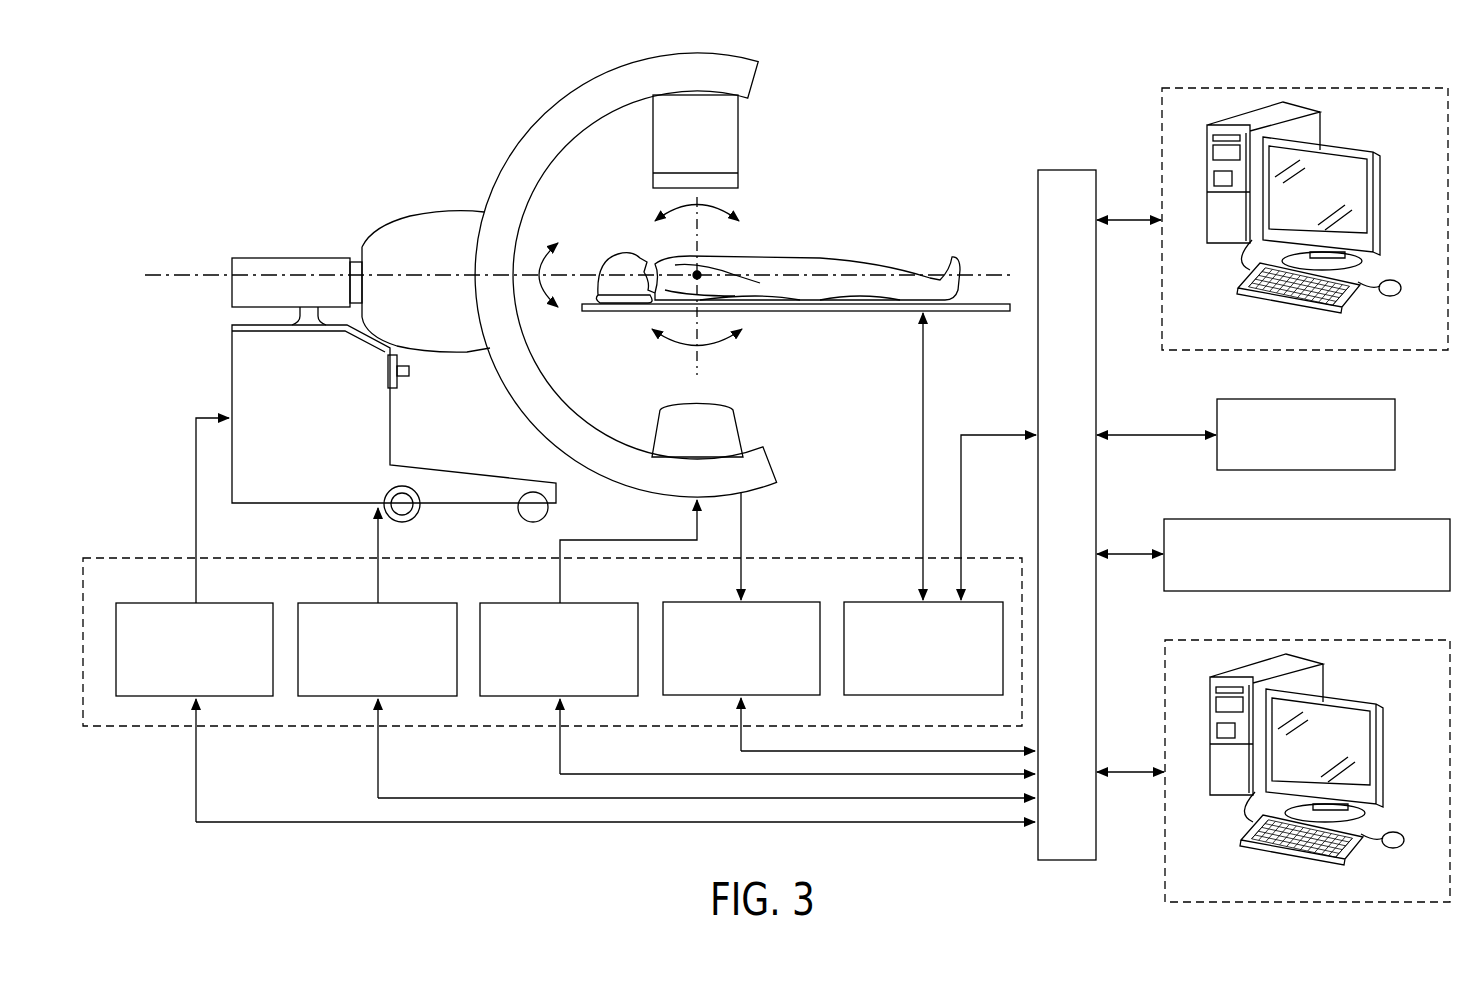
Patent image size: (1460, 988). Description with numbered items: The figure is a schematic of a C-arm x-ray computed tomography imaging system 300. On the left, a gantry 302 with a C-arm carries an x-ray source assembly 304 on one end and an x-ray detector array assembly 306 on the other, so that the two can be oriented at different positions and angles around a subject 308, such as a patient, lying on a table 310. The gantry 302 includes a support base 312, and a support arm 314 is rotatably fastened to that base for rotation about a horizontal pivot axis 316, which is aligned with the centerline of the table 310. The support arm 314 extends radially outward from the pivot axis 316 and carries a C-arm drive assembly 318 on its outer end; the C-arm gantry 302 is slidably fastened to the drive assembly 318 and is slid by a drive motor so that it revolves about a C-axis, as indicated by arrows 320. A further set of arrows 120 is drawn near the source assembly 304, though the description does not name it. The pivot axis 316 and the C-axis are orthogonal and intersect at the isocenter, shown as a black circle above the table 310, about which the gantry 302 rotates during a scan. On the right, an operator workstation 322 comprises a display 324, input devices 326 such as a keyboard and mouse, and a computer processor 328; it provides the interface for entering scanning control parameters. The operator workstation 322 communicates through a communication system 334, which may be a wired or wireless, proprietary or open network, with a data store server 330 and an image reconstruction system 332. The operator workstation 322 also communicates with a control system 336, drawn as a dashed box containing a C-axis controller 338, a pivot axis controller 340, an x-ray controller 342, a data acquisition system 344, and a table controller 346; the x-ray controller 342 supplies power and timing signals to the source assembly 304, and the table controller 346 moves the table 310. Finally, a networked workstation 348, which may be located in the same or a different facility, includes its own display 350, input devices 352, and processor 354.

The C-arm x-ray imaging system 300 is at (254, 132).
The gantry 302 is at (520, 140).
The x-ray source assembly 304 is at (738, 141).
The x-ray detector array assembly 306 is at (736, 425).
The subject 308 is at (789, 249).
The table 310 is at (950, 313).
The support base 312 is at (230, 372).
The support arm 314 is at (323, 257).
The horizontal pivot axis 316 is at (210, 280).
The C-arm drive assembly 318 is at (408, 215).
The rotation direction of source 120 is at (733, 206).
The arrows 320 is at (716, 345).
The operator workstation 322 is at (1305, 198).
The display 324 is at (1342, 141).
The input devices 326 is at (1240, 278).
The computer processor 328 is at (1242, 116).
The data store server 330 is at (1329, 399).
The image reconstruction system 332 is at (1385, 519).
The communication system 334 is at (1062, 170).
The control system 336 is at (808, 557).
The C-axis controller 338 is at (210, 604).
The pivot axis controller 340 is at (392, 604).
The x-ray controller 342 is at (572, 604).
The data acquisition system 344 is at (757, 602).
The table controller 346 is at (905, 602).
The networked workstation 348 is at (1307, 749).
The display 350 is at (1336, 745).
The input devices 352 is at (1292, 828).
The processor 354 is at (1254, 720).